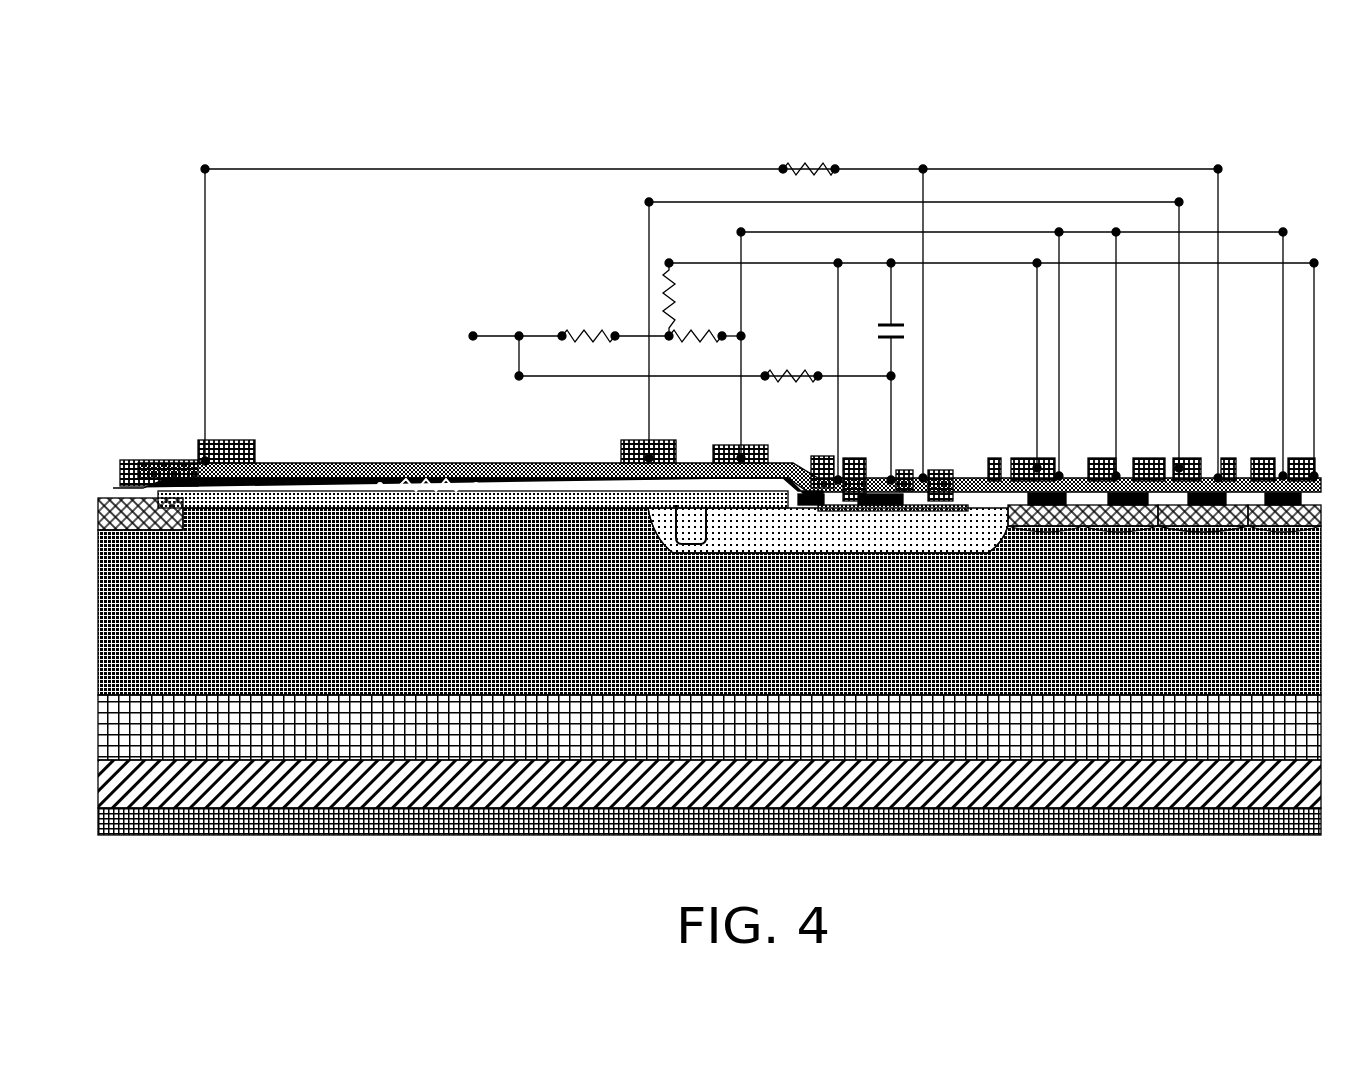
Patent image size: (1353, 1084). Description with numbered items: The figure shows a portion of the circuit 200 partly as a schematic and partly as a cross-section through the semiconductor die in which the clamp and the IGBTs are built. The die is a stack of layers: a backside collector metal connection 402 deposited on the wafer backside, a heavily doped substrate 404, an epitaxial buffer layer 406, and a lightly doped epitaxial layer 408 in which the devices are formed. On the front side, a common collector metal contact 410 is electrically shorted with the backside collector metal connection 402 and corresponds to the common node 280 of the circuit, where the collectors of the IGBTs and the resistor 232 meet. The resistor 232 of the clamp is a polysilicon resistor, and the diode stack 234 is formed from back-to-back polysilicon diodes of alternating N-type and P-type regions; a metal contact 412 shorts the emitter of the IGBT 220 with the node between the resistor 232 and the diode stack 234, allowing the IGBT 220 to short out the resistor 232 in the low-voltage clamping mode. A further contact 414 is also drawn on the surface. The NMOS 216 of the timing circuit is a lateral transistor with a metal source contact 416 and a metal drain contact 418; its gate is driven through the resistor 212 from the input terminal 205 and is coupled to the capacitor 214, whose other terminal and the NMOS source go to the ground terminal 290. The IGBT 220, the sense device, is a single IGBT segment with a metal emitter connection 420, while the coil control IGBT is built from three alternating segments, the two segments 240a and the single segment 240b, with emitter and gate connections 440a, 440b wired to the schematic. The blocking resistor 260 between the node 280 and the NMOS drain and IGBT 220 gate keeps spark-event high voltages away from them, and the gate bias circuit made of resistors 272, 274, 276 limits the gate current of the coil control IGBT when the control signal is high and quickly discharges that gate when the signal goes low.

The circuit 200 is at (258, 112).
The common node 280 is at (196, 158).
The blocking resistor 260 is at (812, 156).
The ground terminal 290 is at (1305, 252).
The resistor 276 is at (660, 265).
The input terminal 205 is at (465, 325).
The resistor 272 is at (584, 325).
The resistor 274 is at (690, 325).
The capacitor 214 is at (891, 315).
The resistor 212 is at (770, 372).
The IGBT segment 440b is at (1296, 462).
The front-side common collector metal contact 410 is at (170, 450).
The resistor 232 is at (425, 472).
The metal contact 412 is at (628, 433).
The contact 414 is at (758, 440).
The metal source contact 416 is at (845, 458).
The metal drain contact 418 is at (912, 465).
The IGBT segments 440a is at (1062, 452).
The metal emitter connection 420 is at (1172, 458).
The diode stack 234 is at (683, 536).
The NMOS transistor 216 is at (950, 500).
The IGBT segments 240a is at (1140, 512).
The IGBT 220 is at (1238, 515).
The IGBT segment 240b is at (1310, 515).
The lightly doped epitaxial layer 408 is at (1272, 677).
The epitaxial buffer layer 406 is at (1272, 735).
The heavily doped substrate 404 is at (1272, 789).
The backside collector metal connection 402 is at (1272, 825).